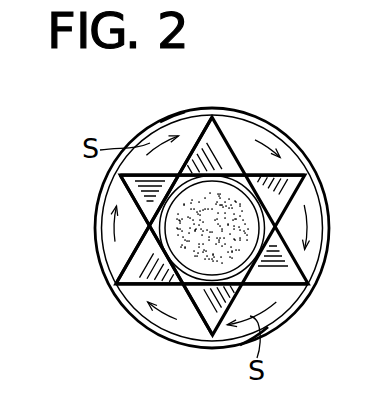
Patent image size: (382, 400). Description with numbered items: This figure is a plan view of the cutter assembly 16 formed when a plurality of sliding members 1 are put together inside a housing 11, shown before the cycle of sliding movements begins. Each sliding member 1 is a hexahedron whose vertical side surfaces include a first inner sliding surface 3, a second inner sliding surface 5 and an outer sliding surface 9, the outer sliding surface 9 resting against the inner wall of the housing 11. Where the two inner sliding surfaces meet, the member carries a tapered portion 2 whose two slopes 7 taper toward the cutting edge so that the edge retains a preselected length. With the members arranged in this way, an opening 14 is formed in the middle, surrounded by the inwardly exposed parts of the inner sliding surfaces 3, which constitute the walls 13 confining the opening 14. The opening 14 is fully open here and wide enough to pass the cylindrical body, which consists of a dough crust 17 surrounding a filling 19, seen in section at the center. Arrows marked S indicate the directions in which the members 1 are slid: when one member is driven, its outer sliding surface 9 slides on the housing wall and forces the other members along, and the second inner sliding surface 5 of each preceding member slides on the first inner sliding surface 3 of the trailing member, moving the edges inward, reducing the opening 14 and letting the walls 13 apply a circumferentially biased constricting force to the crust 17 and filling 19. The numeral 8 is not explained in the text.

The sliding member 1 is at (122, 192).
The tapered portion 2 is at (186, 278).
The first inner sliding surface 3 is at (201, 117).
The second inner sliding surface 5 is at (128, 291).
The slopes 7 is at (285, 255).
The hatched tip section 8 is at (213, 148).
The outer sliding surface 9 is at (170, 117).
The housing 11 is at (298, 303).
The walls 13 is at (240, 171).
The opening 14 is at (152, 230).
The assembly 16 is at (119, 132).
The dough crust 17 is at (254, 225).
The filling 19 is at (228, 222).